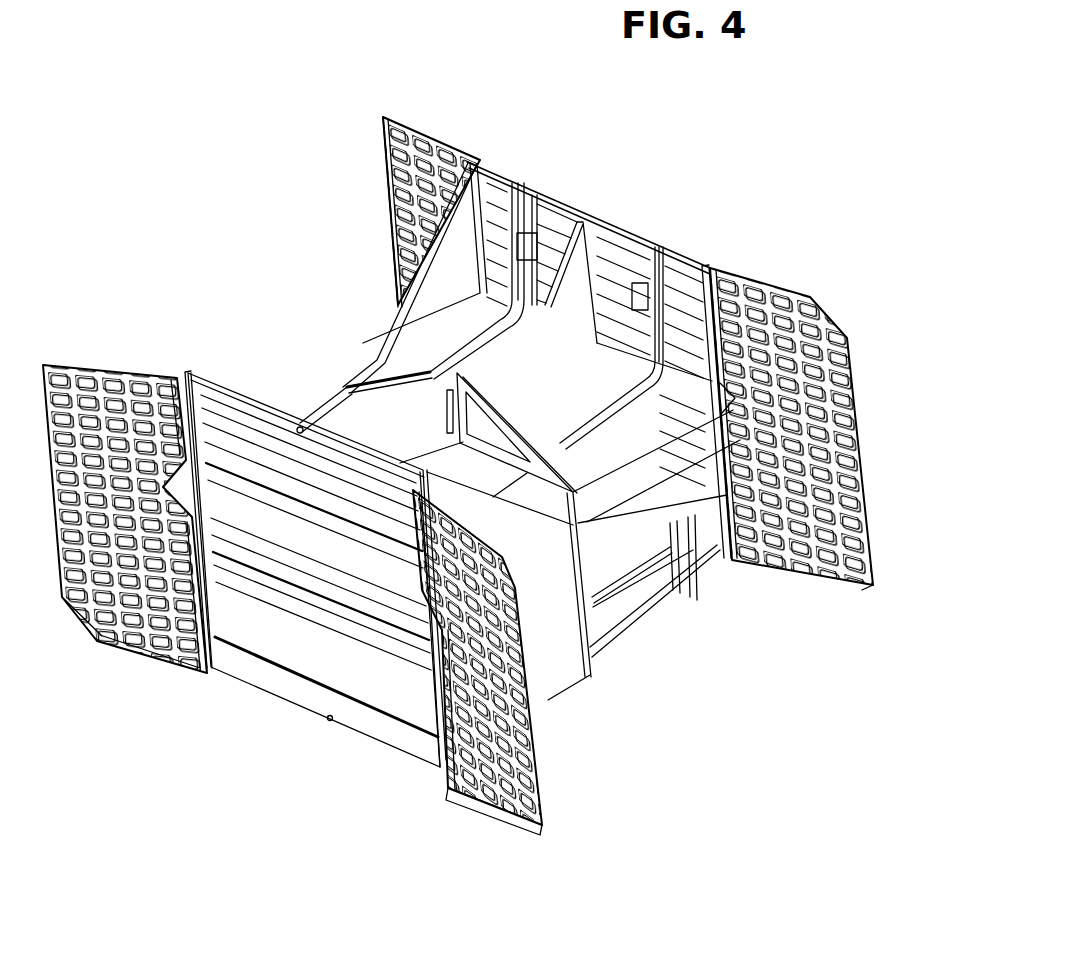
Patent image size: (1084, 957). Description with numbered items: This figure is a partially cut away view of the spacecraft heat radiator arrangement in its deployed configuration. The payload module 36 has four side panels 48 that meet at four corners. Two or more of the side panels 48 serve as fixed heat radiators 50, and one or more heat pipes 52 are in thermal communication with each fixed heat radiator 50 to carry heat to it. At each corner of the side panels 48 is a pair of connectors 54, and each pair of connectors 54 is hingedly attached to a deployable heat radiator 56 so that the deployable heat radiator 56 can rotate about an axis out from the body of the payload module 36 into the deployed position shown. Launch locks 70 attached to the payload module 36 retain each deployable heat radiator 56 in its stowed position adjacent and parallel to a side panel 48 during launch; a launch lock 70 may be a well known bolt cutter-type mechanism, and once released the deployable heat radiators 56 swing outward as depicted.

The payload module 36 is at (700, 570).
The side panel 48 is at (395, 310).
The fixed heat radiator 50 is at (603, 230).
The heat pipe 52 is at (495, 358).
The connector 54 is at (173, 372).
The deployable heat radiator 56 is at (392, 200).
The launch lock 70 is at (300, 427).